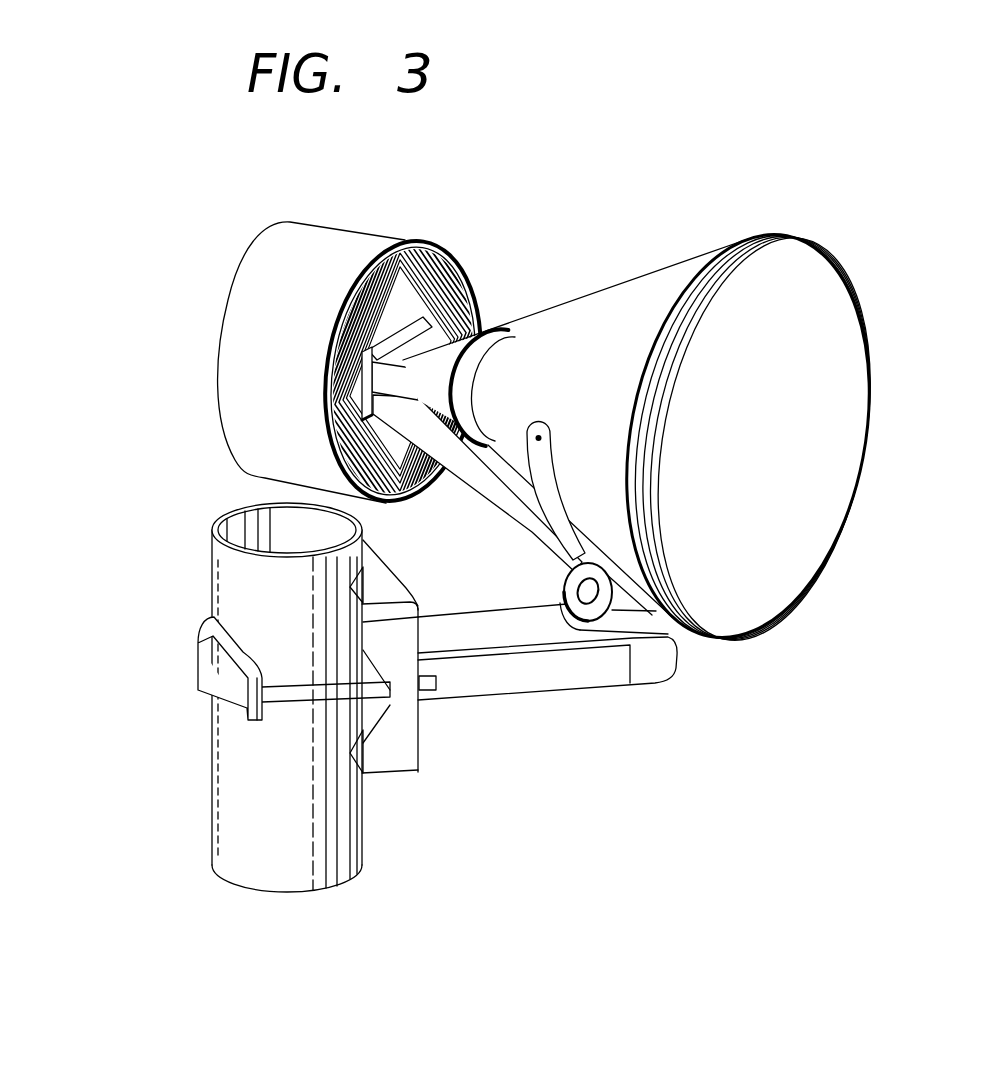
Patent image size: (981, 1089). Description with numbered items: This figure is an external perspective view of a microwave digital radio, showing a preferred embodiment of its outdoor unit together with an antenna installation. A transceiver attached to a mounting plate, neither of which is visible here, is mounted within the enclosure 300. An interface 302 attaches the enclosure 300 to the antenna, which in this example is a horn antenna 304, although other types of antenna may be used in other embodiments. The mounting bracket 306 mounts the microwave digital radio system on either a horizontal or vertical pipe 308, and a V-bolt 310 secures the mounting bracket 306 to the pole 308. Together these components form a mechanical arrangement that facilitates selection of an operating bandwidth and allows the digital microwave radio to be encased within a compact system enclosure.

The enclosure 300 is at (272, 265).
The interface 302 is at (427, 268).
The horn antenna 304 is at (627, 298).
The mounting bracket 306 is at (570, 673).
The pipe 308 is at (243, 845).
The V-bolt 310 is at (223, 672).